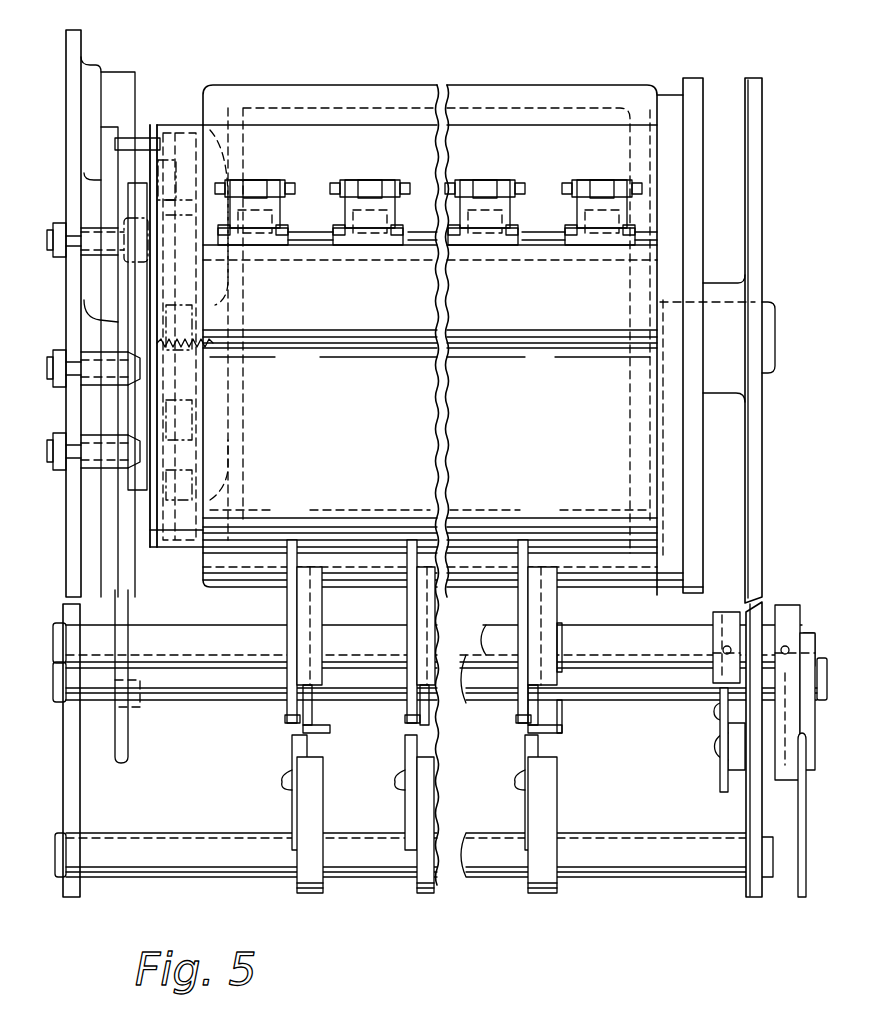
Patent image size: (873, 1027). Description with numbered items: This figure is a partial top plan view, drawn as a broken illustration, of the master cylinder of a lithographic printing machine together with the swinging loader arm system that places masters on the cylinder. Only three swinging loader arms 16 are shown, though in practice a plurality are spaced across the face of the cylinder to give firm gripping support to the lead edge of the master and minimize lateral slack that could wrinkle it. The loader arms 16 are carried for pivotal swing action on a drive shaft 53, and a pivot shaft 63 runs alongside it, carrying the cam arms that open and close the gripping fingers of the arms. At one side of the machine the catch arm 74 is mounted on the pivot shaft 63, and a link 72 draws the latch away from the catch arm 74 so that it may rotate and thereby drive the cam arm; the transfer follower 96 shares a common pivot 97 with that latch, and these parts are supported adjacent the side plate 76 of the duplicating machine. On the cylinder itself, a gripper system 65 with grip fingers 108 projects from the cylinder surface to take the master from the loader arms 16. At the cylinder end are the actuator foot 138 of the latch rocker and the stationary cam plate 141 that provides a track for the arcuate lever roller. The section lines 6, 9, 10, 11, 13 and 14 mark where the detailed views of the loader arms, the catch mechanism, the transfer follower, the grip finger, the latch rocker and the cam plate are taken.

The section line 6- 6 is at (500, 483).
The section line 9- 9 is at (833, 600).
The section line 10- 10 is at (768, 603).
The section line 11- 11 is at (330, 25).
The section line 13- 13 is at (140, 60).
The section line 14- 14 is at (147, 22).
The swinging loader arm 16 is at (398, 708).
The drive shaft 53 is at (60, 683).
The pivot shaft 63 is at (58, 634).
The gripper system 65 is at (370, 238).
The link 72 is at (803, 863).
The catch arm 74 is at (793, 614).
The side plate 76 is at (755, 827).
The transfer follower 96 is at (720, 775).
The common pivot 97 is at (712, 747).
The grip finger 108 is at (483, 246).
The actuator foot 138 is at (140, 138).
The stationary cam plate 141 is at (132, 480).